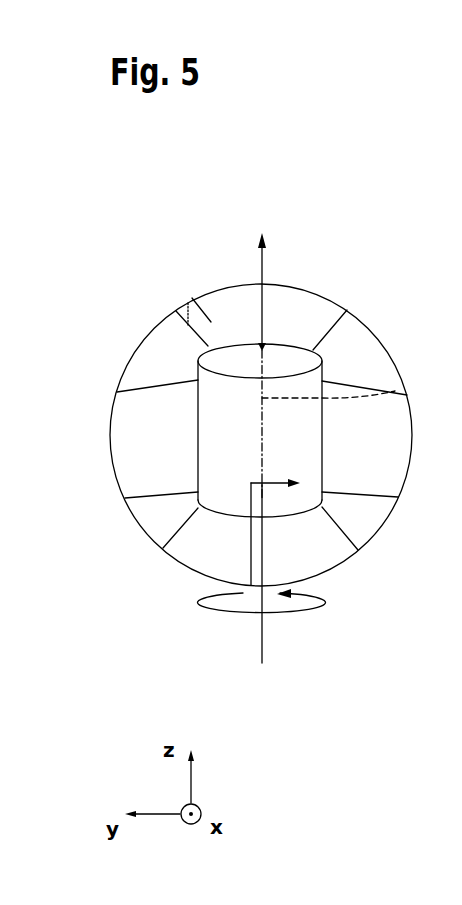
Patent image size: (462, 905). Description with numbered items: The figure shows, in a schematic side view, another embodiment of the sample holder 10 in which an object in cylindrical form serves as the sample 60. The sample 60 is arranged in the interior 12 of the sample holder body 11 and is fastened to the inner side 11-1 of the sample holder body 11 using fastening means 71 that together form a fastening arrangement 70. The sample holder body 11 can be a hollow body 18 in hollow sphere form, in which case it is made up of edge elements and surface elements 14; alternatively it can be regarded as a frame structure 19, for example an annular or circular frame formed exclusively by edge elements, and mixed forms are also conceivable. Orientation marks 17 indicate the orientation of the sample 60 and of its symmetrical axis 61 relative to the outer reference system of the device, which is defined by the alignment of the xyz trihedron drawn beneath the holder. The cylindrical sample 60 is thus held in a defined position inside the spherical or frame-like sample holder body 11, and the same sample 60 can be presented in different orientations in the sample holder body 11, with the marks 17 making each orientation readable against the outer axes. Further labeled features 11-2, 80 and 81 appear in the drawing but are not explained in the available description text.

The sample holder 10 is at (291, 235).
The hollow body 18 is at (262, 458).
The frame structure 19 is at (262, 458).
The sample holder body 11 is at (322, 293).
The inner side 11-1 is at (208, 305).
The second housing segment 11-2 is at (150, 329).
The interior 12 is at (338, 347).
The surface elements 14 is at (350, 368).
The orientation marks 17 is at (251, 543).
The sample 60 is at (302, 444).
The symmetrical axis 61 is at (382, 391).
The fastening arrangement 70 is at (186, 341).
The fastening means 71 is at (215, 334).
The rotation direction 80 is at (208, 645).
The shaft 81 is at (262, 636).